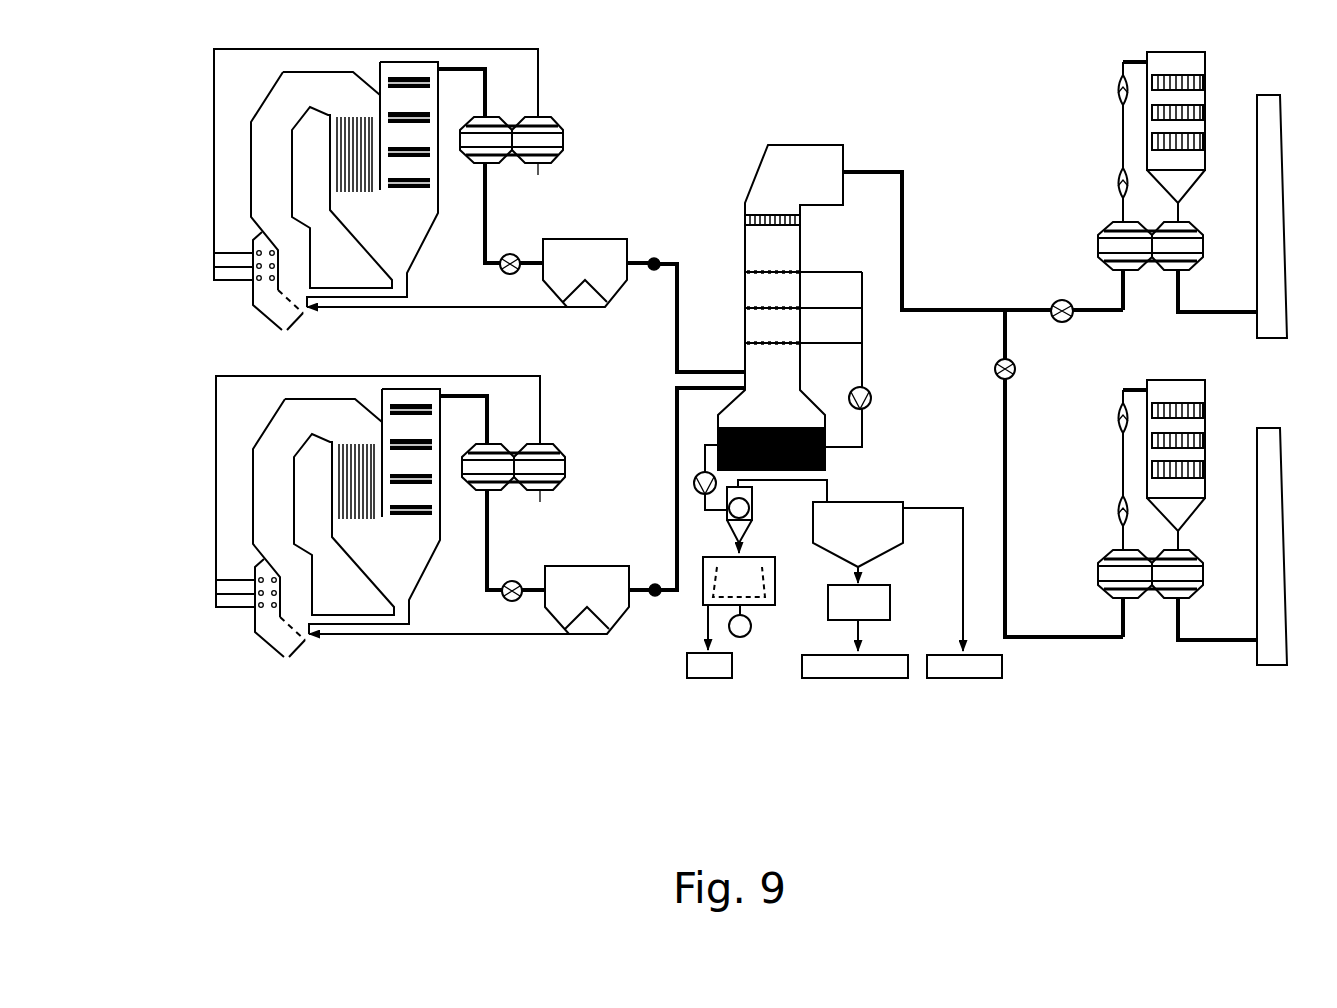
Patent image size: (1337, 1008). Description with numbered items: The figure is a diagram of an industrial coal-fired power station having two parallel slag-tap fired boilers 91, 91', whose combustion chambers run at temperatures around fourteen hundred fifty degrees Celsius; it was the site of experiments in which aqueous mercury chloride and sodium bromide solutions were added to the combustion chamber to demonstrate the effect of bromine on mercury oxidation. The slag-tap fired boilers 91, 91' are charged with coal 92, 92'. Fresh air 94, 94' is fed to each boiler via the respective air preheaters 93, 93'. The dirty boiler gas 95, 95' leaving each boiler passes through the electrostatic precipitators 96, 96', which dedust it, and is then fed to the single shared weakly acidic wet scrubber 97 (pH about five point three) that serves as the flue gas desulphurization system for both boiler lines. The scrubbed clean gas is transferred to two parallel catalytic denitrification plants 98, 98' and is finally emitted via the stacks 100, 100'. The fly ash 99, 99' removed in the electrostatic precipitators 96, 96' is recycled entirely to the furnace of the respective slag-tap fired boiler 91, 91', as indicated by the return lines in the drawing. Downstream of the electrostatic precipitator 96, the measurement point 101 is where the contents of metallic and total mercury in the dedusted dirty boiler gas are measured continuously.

The slag-tap fired boiler 91 is at (284, 188).
The coal 92 is at (189, 250).
The air preheater 93 is at (541, 116).
The fresh air 94 is at (424, 148).
The dirty boiler gas 95 is at (555, 206).
The electrostatic precipitator 96 is at (595, 245).
The wet scrubber (FGD scrubber) 97 is at (792, 173).
The catalytic denitrification plant 98 is at (1137, 182).
The fly ash 99 is at (437, 331).
The stack 100 is at (1225, 229).
The measurement point 101 is at (657, 252).
The slag-tap fired boiler 91' is at (295, 516).
The coal 92' is at (192, 577).
The air preheater 93' is at (544, 451).
The fresh air 94' is at (421, 473).
The dirty boiler gas 95' is at (561, 535).
The electrostatic precipitator 96' is at (597, 569).
The catalytic denitrification plant 98' is at (1148, 510).
The fly ash 99' is at (439, 657).
The stack 100' is at (1223, 562).